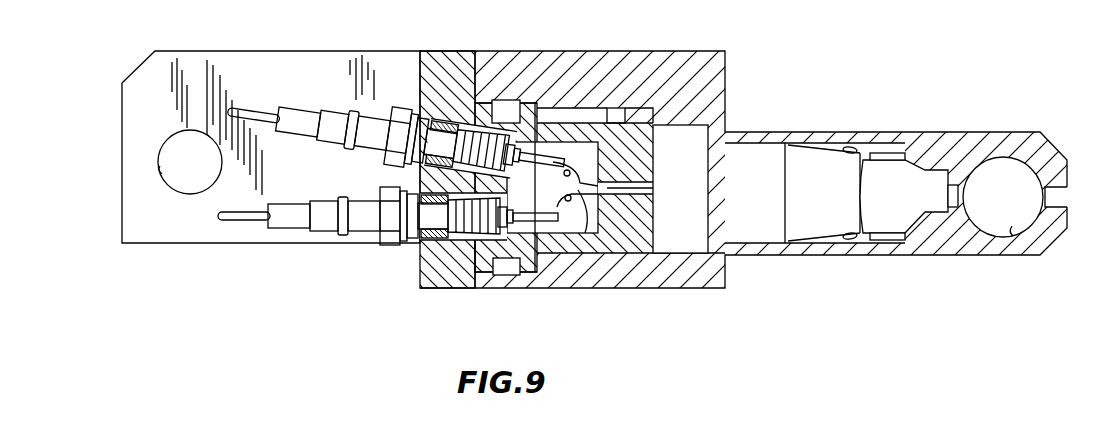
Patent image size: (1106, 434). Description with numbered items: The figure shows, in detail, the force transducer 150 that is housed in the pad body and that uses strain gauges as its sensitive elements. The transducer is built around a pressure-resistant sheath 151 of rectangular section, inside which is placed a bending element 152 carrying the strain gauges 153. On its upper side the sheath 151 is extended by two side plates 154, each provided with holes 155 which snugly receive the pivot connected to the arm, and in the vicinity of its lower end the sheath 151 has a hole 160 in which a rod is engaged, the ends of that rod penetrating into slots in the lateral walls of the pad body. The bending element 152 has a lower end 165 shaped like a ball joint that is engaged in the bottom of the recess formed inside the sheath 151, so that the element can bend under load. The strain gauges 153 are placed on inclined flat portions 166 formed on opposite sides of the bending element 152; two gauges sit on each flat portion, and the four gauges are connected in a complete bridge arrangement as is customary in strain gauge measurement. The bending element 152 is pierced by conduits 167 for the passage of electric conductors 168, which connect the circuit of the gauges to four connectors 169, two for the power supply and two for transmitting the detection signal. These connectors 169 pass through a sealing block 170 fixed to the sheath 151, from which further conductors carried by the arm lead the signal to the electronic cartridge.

The force transducer 150 is at (433, 301).
The pressure-resistant sheath 151 is at (682, 290).
The bending element 152 is at (737, 225).
The strain gauges 153 is at (845, 147).
The side plates 154 is at (313, 73).
The holes 155 is at (165, 170).
The hole 160 is at (1013, 230).
The lower end 165 is at (930, 200).
The inclined flat portions 166 is at (806, 240).
The conduits 167 is at (631, 202).
The electric conductors 168 is at (583, 232).
The connectors 169 is at (360, 225).
The sealing block 170 is at (447, 68).